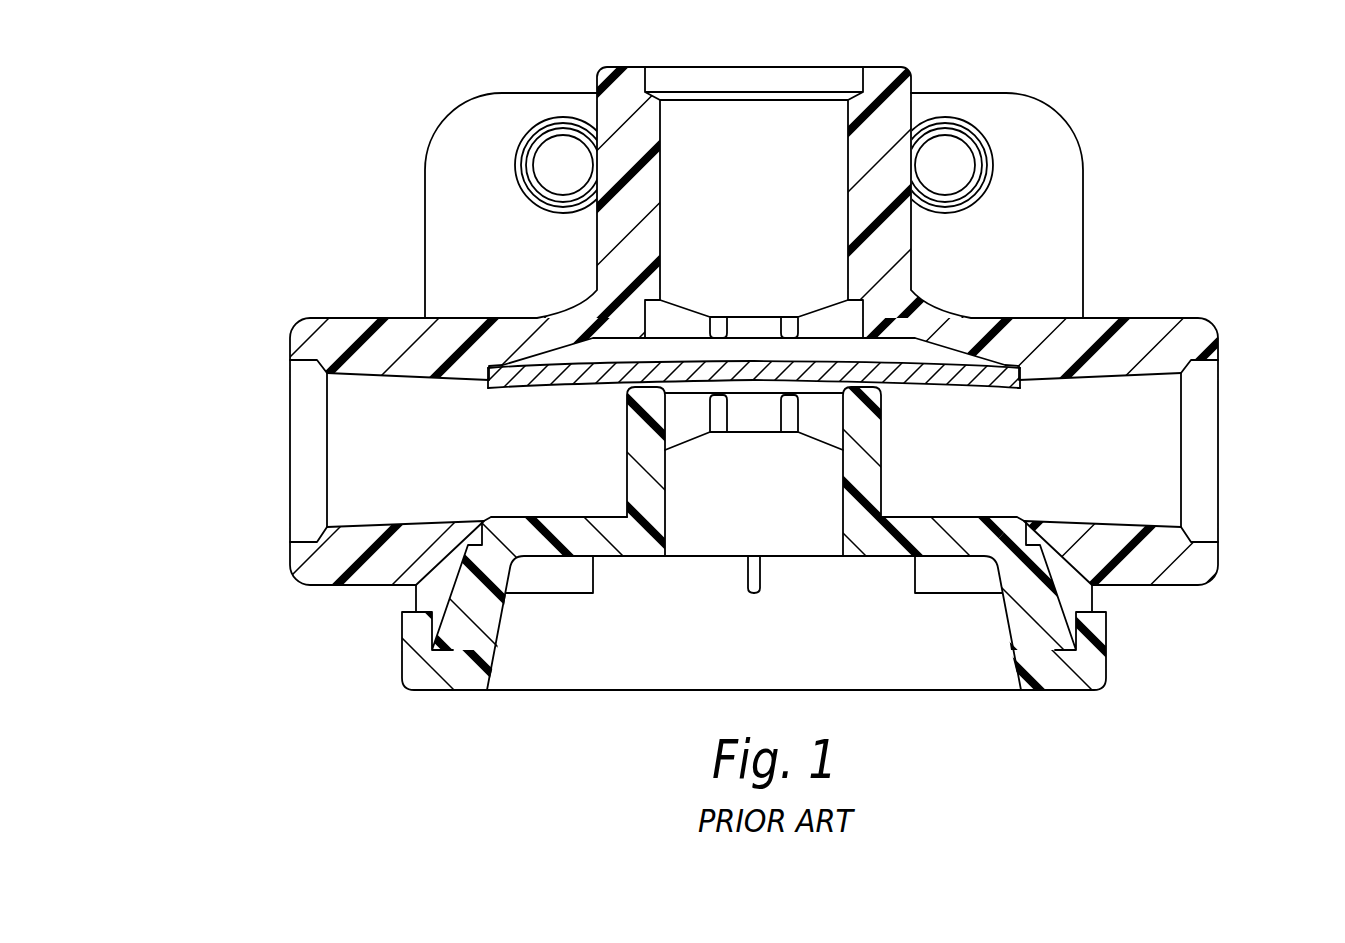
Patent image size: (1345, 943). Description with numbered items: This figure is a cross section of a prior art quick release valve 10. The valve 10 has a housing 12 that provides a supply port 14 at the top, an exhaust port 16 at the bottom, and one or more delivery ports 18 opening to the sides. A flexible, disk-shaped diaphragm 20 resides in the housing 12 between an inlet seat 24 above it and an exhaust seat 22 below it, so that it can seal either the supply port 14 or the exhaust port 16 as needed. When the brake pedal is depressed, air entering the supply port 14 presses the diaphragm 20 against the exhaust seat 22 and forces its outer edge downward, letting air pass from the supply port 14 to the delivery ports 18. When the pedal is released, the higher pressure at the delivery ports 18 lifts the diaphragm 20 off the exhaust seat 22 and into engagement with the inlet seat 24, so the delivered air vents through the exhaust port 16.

The valve 10 is at (310, 119).
The housing 12 is at (612, 115).
The supply port 14 is at (763, 317).
The exhaust port 16 is at (752, 398).
The delivery ports 18 is at (310, 443).
The diaphragm 20 is at (917, 381).
The exhaust seat 22 is at (627, 388).
The inlet seat 24 is at (520, 388).